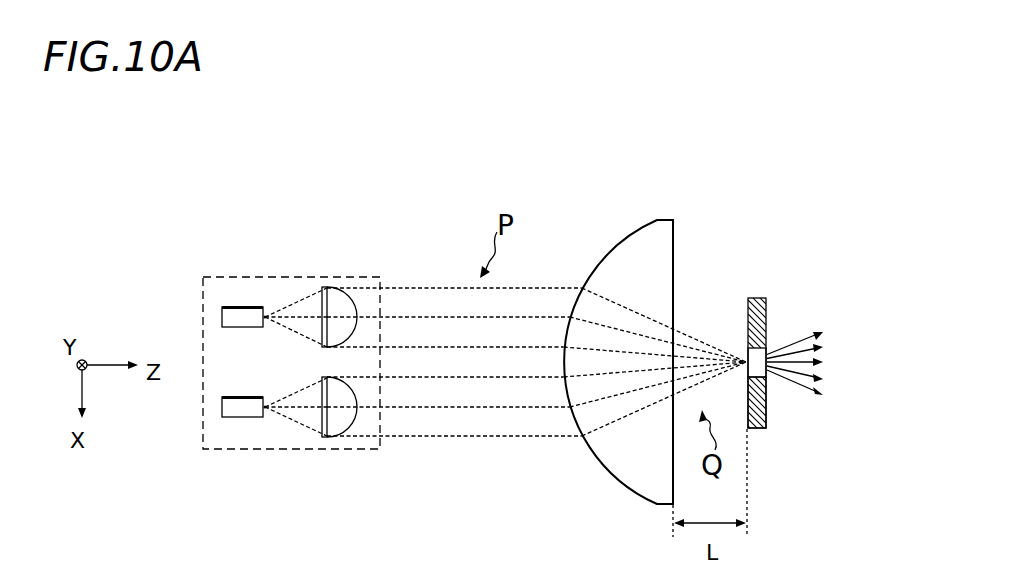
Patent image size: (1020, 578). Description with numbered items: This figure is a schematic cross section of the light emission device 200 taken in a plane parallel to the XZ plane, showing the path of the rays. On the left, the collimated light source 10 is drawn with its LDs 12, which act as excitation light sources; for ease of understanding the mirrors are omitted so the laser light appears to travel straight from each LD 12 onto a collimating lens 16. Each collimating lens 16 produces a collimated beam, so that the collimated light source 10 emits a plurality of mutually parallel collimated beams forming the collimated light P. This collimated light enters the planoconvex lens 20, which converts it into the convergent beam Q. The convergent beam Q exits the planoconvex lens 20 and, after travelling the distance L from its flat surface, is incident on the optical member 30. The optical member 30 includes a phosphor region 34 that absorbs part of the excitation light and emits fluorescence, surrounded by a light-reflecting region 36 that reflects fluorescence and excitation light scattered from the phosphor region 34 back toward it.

The light emission device 200 is at (448, 182).
The collimated light source 10 is at (292, 450).
The LD 12 is at (246, 306).
The collimating lens 16 is at (323, 286).
The planoconvex lens 20 is at (640, 228).
The optical member 30 is at (747, 298).
The phosphor region 34 is at (762, 380).
The light-reflecting region 36 is at (767, 310).